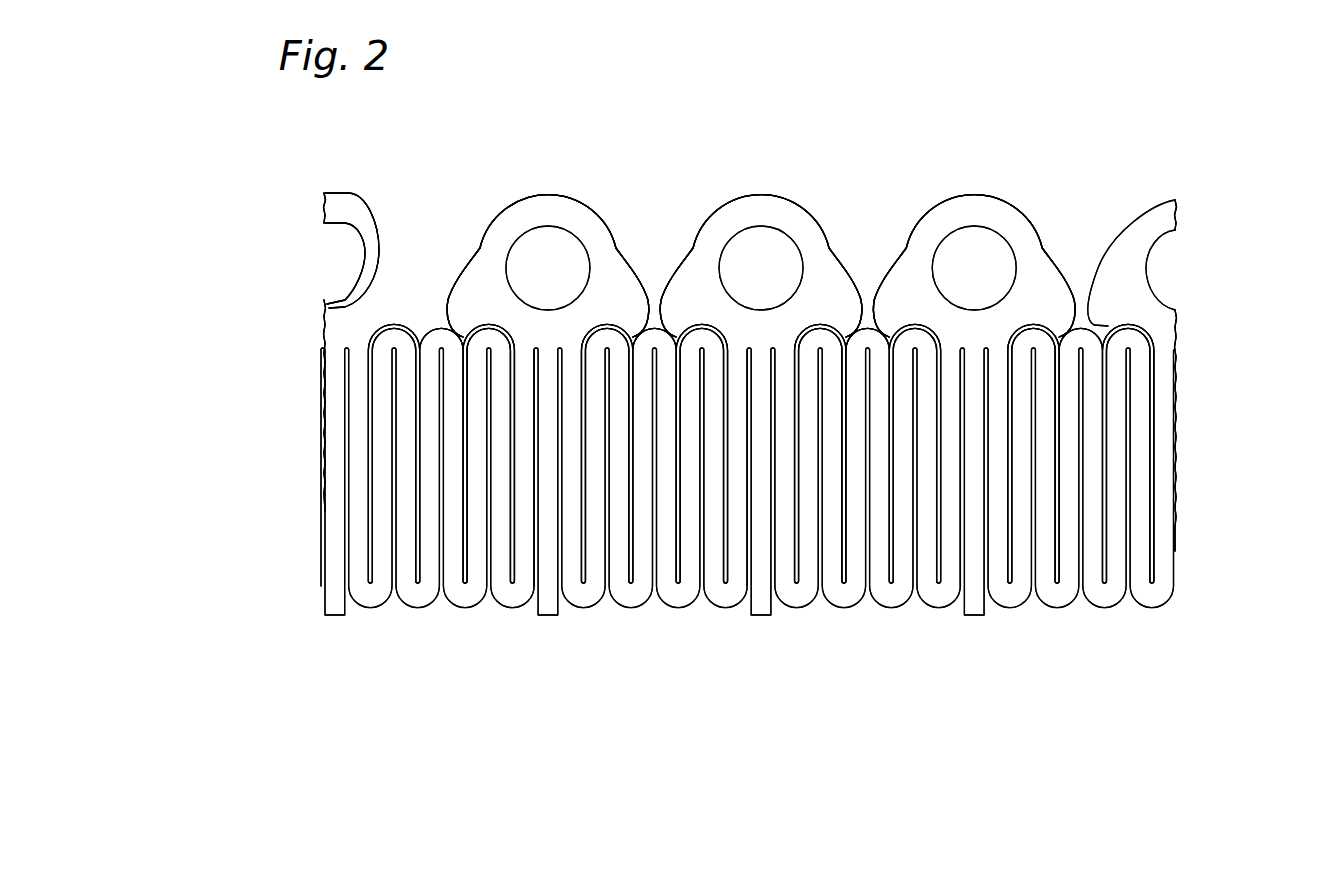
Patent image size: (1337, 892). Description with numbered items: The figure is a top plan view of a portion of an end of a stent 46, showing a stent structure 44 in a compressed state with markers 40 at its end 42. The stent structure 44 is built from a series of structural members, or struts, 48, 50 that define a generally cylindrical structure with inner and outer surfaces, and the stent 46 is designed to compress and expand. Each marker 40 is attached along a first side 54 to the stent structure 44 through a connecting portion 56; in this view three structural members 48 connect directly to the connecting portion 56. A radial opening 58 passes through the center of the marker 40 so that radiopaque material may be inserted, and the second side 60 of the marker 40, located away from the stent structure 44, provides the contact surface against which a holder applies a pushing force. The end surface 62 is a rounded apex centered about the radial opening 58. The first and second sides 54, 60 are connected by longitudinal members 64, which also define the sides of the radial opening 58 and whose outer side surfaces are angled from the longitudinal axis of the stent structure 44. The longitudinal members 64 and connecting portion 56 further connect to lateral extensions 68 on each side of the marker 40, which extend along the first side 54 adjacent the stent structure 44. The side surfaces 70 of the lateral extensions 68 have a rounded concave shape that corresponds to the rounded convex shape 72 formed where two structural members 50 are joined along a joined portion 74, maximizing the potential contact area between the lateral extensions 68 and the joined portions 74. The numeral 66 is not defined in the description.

The marker 40 is at (382, 208).
The end of stent structure 42 is at (316, 341).
The stent structure 44 is at (320, 458).
The stent 46 is at (246, 247).
The structural members 48 is at (346, 363).
The structural members 50 is at (399, 405).
The first side 54 is at (316, 318).
The connecting portion 56 is at (392, 314).
The radial opening 58 is at (340, 260).
The second side 60 is at (302, 207).
The end surface (rounded apex) 62 is at (338, 190).
The longitudinal members 64 is at (392, 230).
The gap between loops 66 is at (414, 261).
The lateral extensions 68 is at (406, 300).
The side surfaces (rounded concave shape) 70 is at (336, 257).
The rounded convex shape 72 is at (466, 340).
The joined portion 74 is at (399, 341).